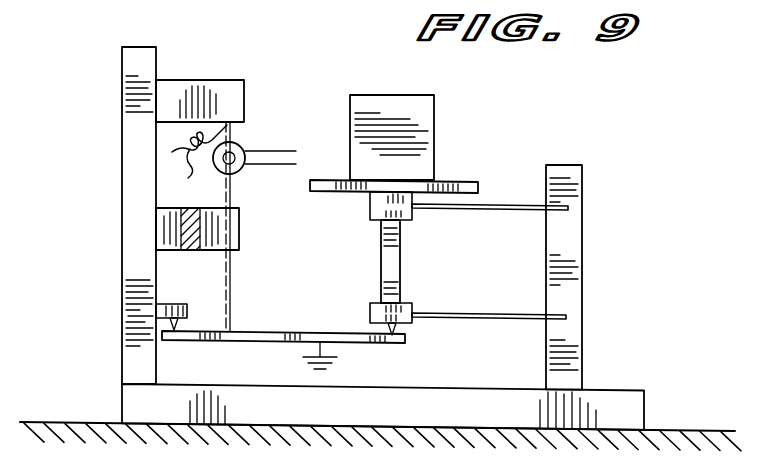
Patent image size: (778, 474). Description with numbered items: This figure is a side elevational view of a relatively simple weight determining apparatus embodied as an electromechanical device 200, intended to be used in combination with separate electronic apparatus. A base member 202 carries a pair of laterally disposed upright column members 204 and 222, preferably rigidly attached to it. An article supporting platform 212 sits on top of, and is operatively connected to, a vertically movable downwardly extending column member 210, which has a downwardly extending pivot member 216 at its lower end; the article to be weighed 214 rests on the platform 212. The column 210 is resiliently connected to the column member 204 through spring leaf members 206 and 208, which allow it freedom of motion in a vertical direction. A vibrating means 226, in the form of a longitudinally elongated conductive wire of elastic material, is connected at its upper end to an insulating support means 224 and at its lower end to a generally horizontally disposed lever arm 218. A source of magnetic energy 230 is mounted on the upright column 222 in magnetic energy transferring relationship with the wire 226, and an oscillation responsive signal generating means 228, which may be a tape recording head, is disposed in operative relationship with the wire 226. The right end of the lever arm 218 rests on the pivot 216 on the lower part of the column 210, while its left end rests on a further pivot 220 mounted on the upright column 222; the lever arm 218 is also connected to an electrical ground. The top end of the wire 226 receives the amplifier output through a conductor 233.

The electromechanical device 200 is at (614, 248).
The base member 202 is at (622, 402).
The upright column member 204 is at (578, 179).
The spring leaf member 206 is at (505, 209).
The spring leaf member 208 is at (513, 313).
The vertically movable column member 210 is at (392, 261).
The article supporting platform 212 is at (327, 186).
The article to be weighed 214 is at (434, 151).
The pivot member 216 is at (396, 330).
The lever arm 218 is at (394, 346).
The pivot 220 is at (182, 329).
The upright column member 222 is at (128, 331).
The insulating support means 224 is at (240, 108).
The vibrating means 226 is at (233, 179).
The oscillation responsive signal generating means 228 is at (243, 151).
The source of magnetic energy 230 is at (240, 231).
The conductor 233 is at (199, 164).